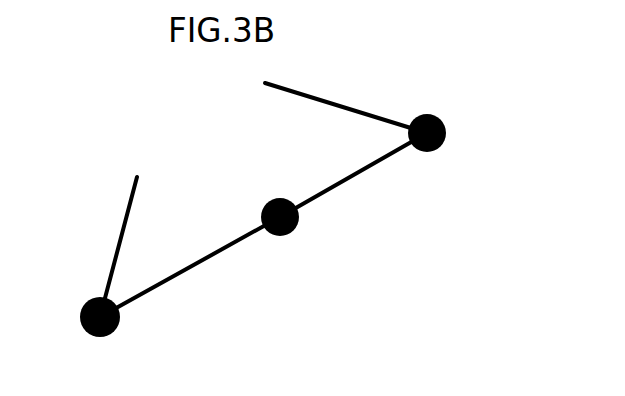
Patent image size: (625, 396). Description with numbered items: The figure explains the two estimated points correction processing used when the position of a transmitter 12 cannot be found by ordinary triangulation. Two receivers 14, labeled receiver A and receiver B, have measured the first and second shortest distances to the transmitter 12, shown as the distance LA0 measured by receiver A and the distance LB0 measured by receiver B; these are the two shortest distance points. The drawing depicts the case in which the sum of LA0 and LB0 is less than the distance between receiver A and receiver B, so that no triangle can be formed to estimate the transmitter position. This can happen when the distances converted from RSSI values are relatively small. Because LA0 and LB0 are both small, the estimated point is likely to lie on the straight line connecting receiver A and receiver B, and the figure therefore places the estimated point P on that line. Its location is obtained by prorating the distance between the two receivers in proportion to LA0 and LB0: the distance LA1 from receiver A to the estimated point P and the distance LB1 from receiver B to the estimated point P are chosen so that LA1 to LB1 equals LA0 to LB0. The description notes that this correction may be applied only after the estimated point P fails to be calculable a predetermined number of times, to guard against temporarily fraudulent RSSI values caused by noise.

The transmitter 12 is at (285, 198).
The receivers 14 is at (287, 236).
The receiver A is at (90, 335).
The receiver B is at (439, 146).
The estimated point P is at (285, 229).
The distance measured by receiver A LA0 is at (131, 247).
The distance between receiver A and estimated point P LA1 is at (190, 267).
The distance measured by receiver B LB0 is at (346, 104).
The distance between receiver B and estimated point P LB1 is at (353, 175).